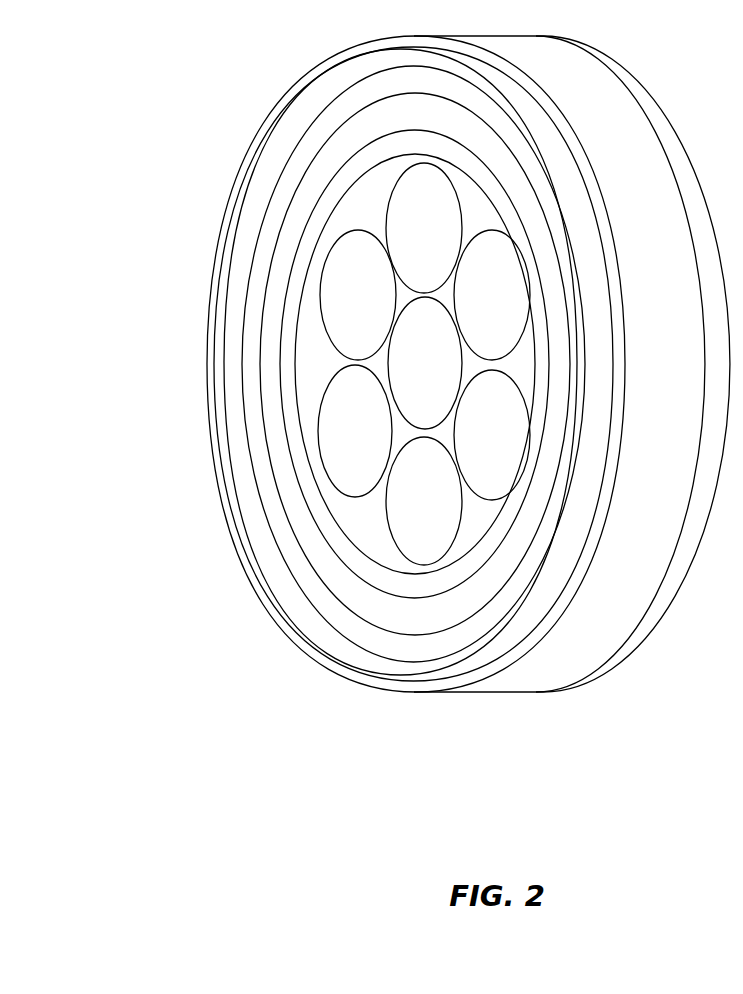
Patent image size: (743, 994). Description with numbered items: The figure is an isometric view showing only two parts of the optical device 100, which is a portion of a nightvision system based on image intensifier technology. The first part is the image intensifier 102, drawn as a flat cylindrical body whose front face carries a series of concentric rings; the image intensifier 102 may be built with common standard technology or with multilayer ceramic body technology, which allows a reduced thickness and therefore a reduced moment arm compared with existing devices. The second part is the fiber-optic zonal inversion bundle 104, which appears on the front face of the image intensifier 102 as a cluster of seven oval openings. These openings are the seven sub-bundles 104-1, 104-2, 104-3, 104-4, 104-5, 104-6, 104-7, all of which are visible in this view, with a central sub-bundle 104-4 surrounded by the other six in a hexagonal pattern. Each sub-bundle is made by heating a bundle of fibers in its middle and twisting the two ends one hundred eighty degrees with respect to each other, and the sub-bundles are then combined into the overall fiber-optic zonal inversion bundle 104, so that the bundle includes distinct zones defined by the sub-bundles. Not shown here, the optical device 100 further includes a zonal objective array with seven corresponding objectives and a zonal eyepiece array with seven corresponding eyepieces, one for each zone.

The optical device 100 is at (515, 803).
The image intensifier 102 is at (680, 463).
The fiber-optic zonal inversion bundle 104 is at (138, 342).
The sub-bundle 104-1 is at (337, 315).
The sub-bundle 104-2 is at (336, 440).
The sub-bundle 104-3 is at (405, 238).
The sub-bundle 104-4 is at (405, 388).
The sub-bundle 104-5 is at (400, 518).
The sub-bundle 104-6 is at (474, 310).
The sub-bundle 104-7 is at (475, 445).